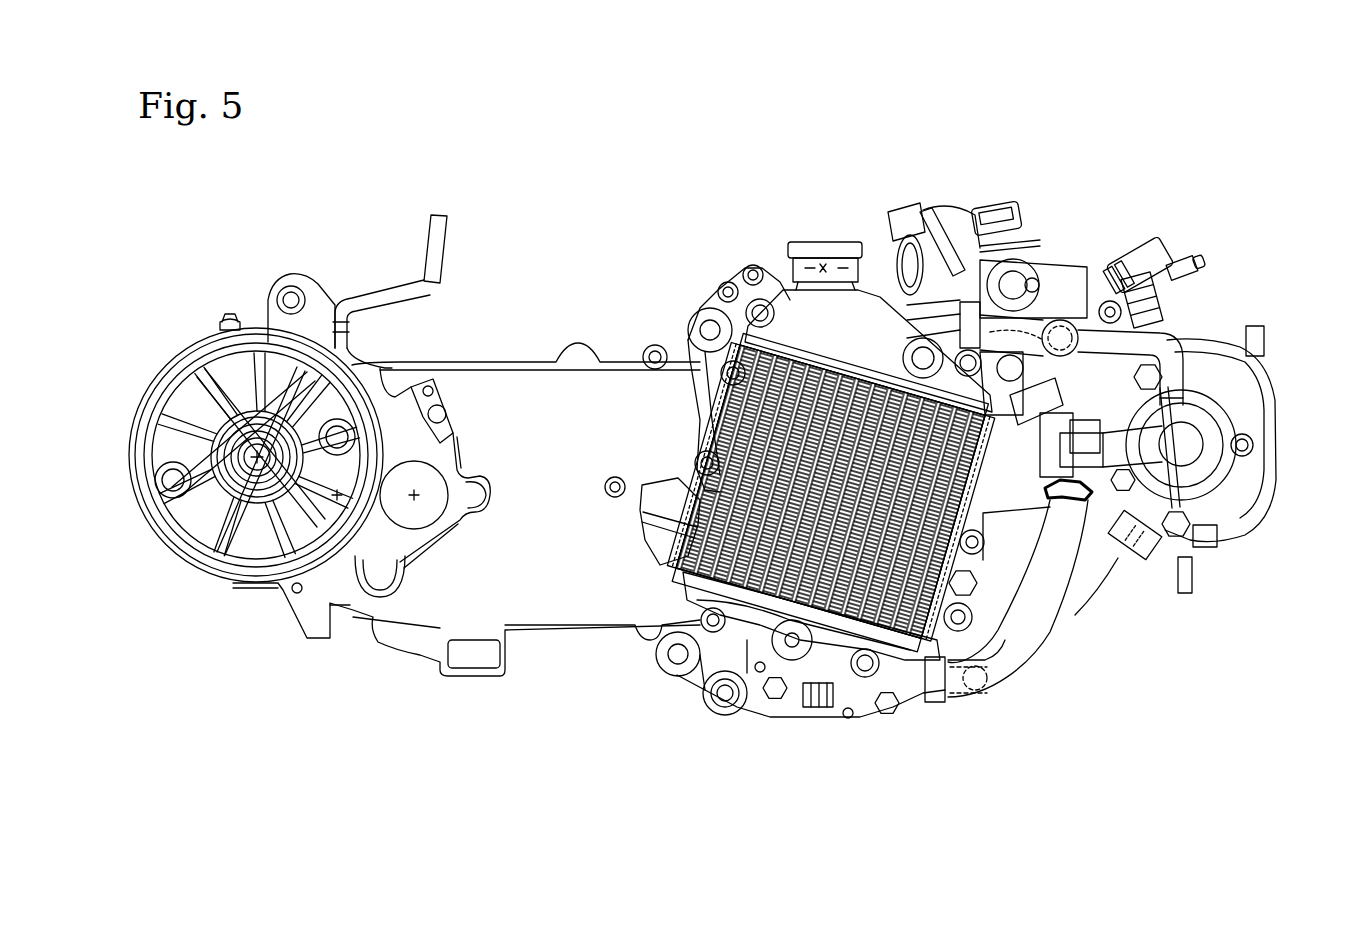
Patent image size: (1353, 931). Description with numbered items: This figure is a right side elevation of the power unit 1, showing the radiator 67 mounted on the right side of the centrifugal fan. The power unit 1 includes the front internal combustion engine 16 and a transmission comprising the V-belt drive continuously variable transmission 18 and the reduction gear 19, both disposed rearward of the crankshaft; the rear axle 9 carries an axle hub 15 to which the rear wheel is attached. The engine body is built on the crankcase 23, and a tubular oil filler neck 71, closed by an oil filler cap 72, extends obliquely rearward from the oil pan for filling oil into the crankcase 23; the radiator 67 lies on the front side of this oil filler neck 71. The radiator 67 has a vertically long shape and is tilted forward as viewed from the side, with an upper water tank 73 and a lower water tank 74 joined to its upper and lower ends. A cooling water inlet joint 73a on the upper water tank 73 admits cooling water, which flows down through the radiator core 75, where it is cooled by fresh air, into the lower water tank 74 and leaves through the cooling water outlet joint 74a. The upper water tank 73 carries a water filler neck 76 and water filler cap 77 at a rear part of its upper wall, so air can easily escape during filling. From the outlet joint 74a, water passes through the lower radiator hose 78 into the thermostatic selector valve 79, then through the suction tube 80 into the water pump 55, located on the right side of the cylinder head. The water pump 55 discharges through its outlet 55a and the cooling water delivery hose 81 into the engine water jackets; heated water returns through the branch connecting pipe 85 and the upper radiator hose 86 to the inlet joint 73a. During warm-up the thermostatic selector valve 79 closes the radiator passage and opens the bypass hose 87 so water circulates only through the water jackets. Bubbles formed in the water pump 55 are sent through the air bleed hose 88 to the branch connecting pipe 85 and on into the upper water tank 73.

The power unit 1 is at (680, 210).
The rear axle 9 is at (257, 462).
The axle hub 15 is at (172, 548).
The internal combustion engine 16 is at (1222, 235).
The V-belt drive continuously variable transmission 18 is at (536, 403).
The reduction gear 19 is at (403, 427).
The crankcase 23 is at (987, 600).
The water pump 55 is at (1203, 448).
The outlet of the water pump 55a is at (1218, 538).
The radiator 67 is at (703, 440).
The oil filler neck 71 is at (685, 535).
The oil filler cap 72 is at (655, 495).
The upper water tank 73 is at (866, 310).
The cooling water inlet joint 73a is at (935, 313).
The lower water tank 74 is at (836, 655).
The cooling water outlet joint 74a is at (953, 697).
The radiator core 75 is at (739, 695).
The water filler neck 76 is at (785, 280).
The water filler cap 77 is at (822, 240).
The lower radiator hose 78 is at (1005, 683).
The thermostatic selector valve 79 is at (1123, 577).
The suction tube 80 is at (1140, 453).
The cooling water delivery hose 81 is at (1087, 603).
The branch connecting pipe 85 is at (1080, 310).
The upper radiator hose 86 is at (1030, 322).
The bypass hose 87 is at (1000, 393).
The air bleed hose 88 is at (1180, 345).